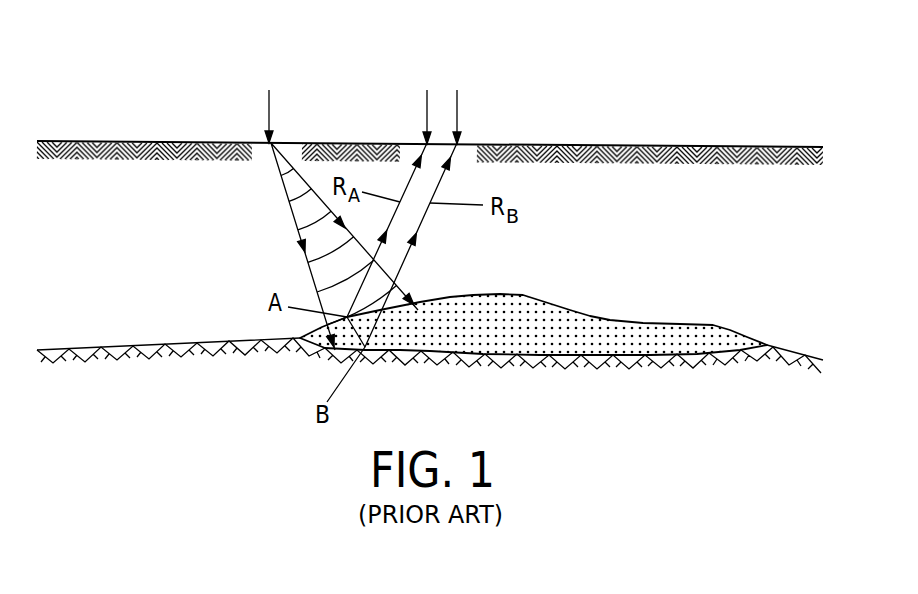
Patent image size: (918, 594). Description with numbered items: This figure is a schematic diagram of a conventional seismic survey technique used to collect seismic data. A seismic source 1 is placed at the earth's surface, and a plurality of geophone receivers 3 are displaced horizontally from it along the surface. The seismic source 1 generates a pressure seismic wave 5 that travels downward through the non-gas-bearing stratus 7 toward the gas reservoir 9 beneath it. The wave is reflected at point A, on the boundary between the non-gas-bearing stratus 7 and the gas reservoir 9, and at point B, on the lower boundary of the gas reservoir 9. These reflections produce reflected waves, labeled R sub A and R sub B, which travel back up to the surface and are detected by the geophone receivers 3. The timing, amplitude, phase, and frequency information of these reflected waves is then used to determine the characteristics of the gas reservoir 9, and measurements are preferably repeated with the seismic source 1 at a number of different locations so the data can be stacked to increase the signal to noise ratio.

The seismic source 1 is at (267, 72).
The geophone receivers 3 is at (441, 72).
The pressure seismic wave 5 is at (293, 220).
The non-gas-bearing stratus 7 is at (640, 223).
The gas reservoir 9 is at (587, 330).